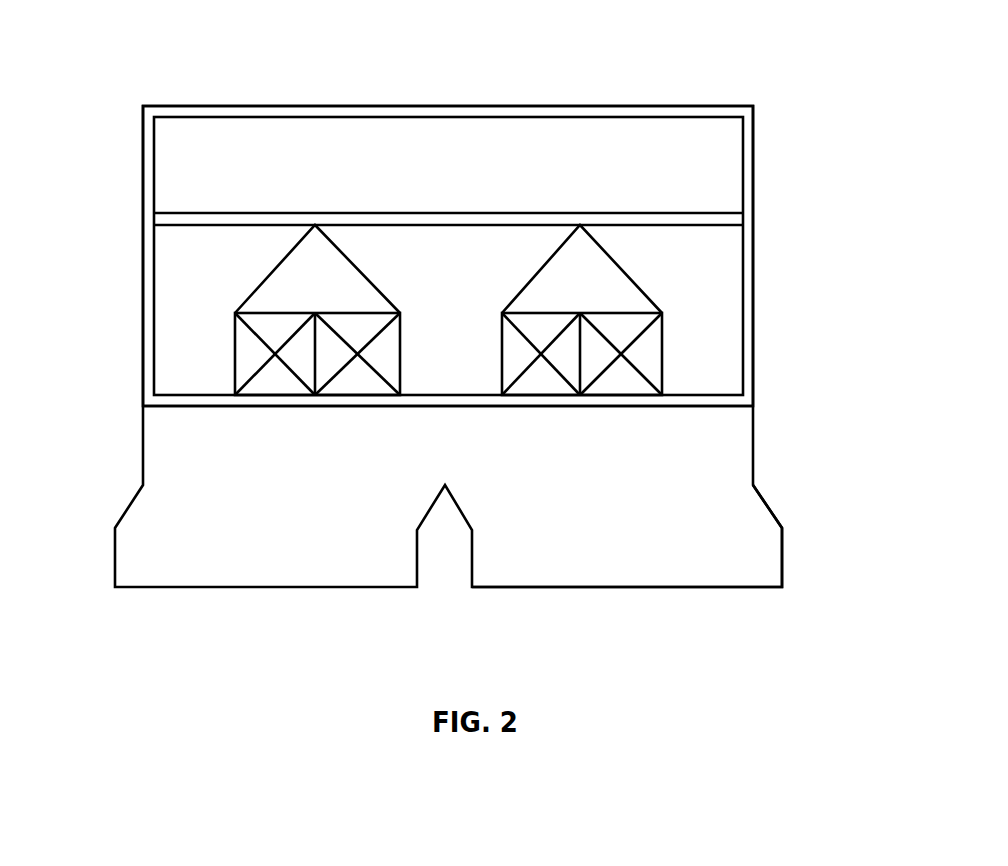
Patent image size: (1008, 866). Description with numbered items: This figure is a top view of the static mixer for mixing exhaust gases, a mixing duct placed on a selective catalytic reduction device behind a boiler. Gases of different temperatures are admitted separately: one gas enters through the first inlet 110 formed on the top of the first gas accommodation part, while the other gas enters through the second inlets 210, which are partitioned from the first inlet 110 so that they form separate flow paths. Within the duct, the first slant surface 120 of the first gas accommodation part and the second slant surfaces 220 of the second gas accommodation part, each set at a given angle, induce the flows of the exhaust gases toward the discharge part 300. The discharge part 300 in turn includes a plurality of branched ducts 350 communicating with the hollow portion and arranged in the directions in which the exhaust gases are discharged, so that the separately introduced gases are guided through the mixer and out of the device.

The first inlet 110 is at (390, 151).
The first slant surface 120 is at (510, 157).
The second inlets 210 is at (316, 272).
The second slant surfaces 220 is at (278, 292).
The discharge part 300 is at (784, 466).
The branched ducts 350 is at (757, 563).